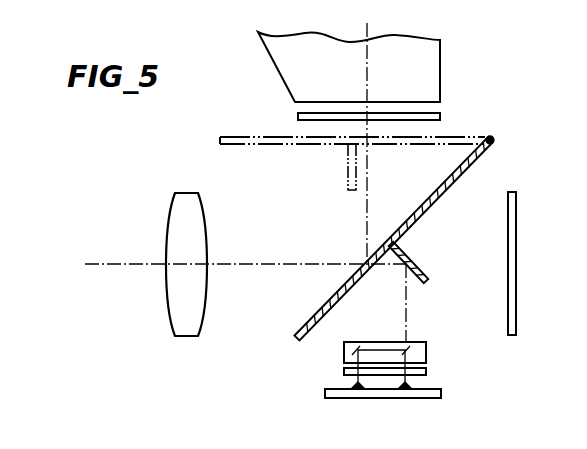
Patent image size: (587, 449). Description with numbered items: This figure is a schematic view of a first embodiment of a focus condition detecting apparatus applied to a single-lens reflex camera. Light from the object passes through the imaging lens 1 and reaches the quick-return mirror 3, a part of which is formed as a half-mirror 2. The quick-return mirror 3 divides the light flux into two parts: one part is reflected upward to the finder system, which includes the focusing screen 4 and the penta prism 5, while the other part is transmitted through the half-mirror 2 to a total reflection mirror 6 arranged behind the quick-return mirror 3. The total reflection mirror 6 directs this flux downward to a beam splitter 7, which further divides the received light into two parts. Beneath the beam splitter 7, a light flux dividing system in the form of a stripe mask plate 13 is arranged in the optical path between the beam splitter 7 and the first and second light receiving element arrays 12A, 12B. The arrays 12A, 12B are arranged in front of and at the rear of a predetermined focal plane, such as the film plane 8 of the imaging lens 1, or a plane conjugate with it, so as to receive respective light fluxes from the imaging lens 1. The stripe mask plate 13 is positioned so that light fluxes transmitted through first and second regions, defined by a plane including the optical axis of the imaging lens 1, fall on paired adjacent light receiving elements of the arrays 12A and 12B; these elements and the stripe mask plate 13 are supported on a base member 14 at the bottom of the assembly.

The imaging lens 1 is at (180, 210).
The half-mirror 2 is at (376, 256).
The quick-return mirror 3 is at (492, 152).
The focusing screen 4 is at (440, 117).
The penta prism 5 is at (432, 62).
The total reflection mirror 6 is at (422, 266).
The beam splitter 7 is at (428, 345).
The predetermined focal plane 8 is at (505, 215).
The first light receiving element array 12A is at (412, 386).
The second light receiving element array 12B is at (353, 386).
The stripe mask plate 13 is at (428, 372).
The base plate 14 is at (432, 398).